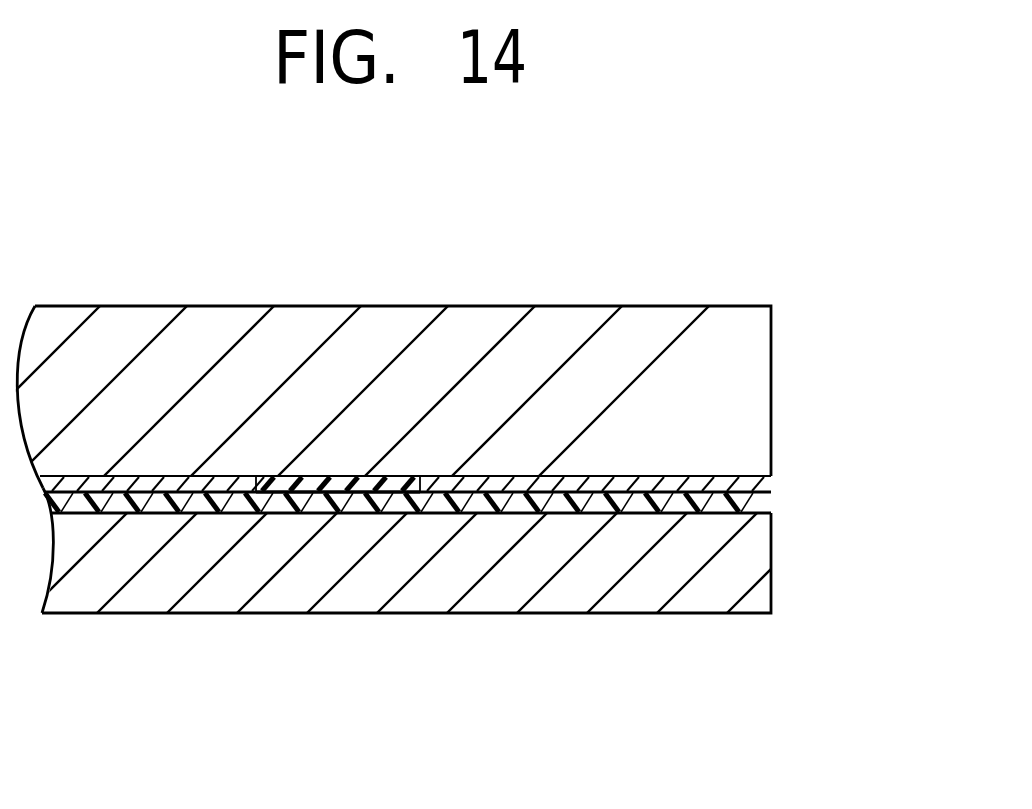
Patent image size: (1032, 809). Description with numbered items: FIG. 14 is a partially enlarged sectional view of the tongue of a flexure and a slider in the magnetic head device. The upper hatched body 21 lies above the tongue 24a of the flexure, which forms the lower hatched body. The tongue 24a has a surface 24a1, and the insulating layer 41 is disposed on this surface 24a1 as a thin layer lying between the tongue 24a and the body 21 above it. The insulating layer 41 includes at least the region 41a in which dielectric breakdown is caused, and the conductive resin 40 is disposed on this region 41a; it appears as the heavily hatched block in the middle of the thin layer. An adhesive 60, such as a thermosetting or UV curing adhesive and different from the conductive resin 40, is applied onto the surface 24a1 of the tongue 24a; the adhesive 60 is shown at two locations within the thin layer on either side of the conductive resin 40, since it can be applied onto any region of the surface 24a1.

The upper substrate 21 is at (640, 392).
The tongue 24a is at (725, 570).
The surface of the tongue 24a1 is at (518, 513).
The conductive resin 40 is at (335, 477).
The insulating layer 41 is at (772, 500).
The region in which dielectric breakdown is caused 41a is at (358, 498).
The adhesive 60 is at (143, 488).